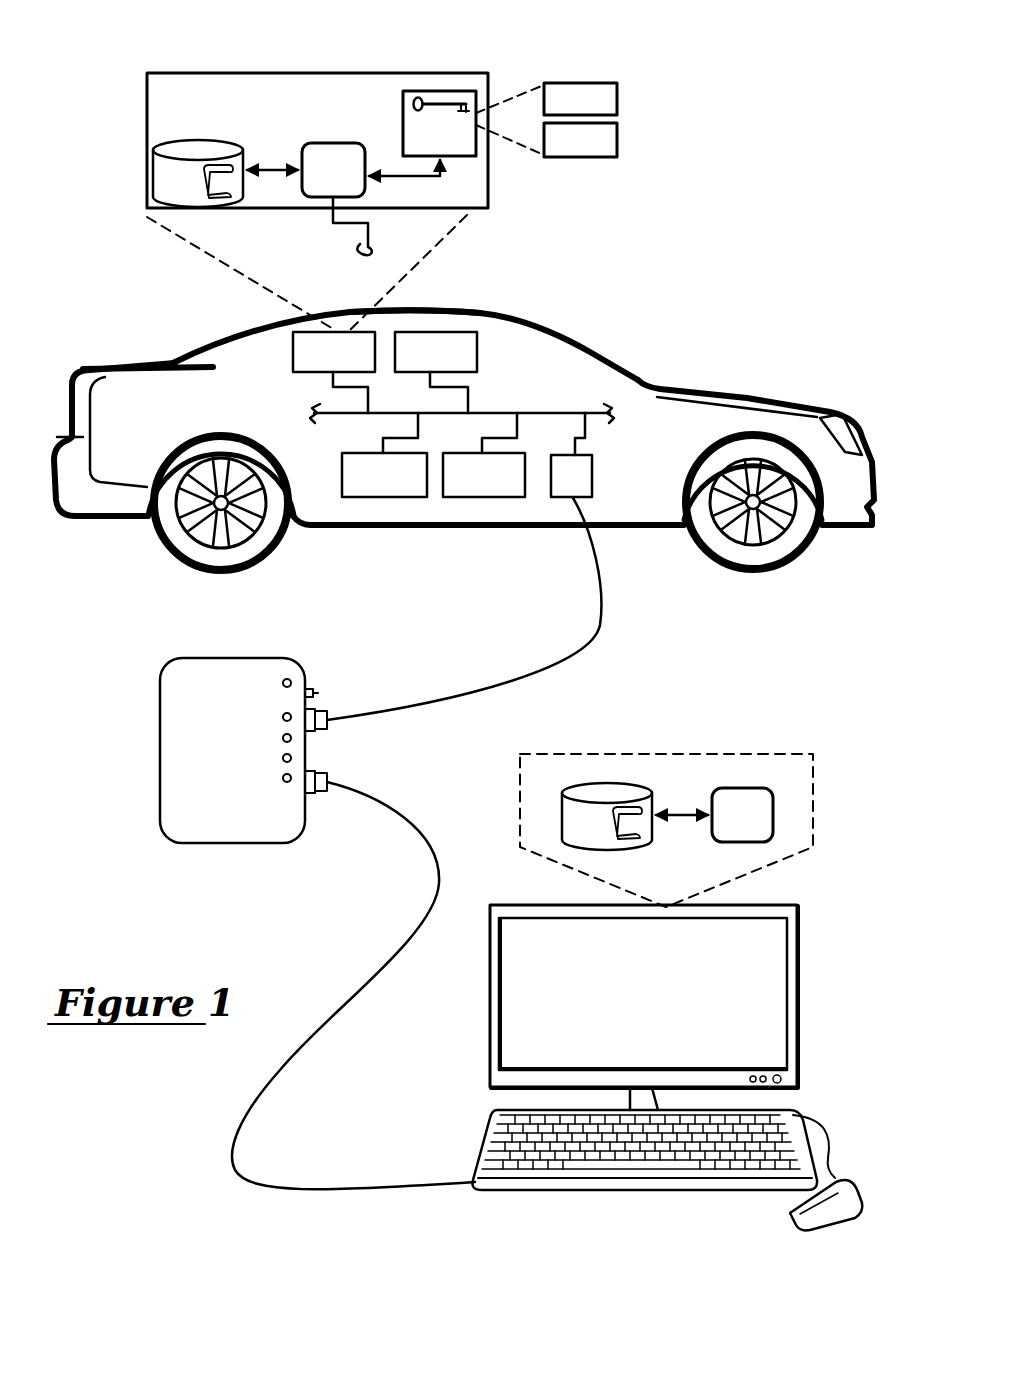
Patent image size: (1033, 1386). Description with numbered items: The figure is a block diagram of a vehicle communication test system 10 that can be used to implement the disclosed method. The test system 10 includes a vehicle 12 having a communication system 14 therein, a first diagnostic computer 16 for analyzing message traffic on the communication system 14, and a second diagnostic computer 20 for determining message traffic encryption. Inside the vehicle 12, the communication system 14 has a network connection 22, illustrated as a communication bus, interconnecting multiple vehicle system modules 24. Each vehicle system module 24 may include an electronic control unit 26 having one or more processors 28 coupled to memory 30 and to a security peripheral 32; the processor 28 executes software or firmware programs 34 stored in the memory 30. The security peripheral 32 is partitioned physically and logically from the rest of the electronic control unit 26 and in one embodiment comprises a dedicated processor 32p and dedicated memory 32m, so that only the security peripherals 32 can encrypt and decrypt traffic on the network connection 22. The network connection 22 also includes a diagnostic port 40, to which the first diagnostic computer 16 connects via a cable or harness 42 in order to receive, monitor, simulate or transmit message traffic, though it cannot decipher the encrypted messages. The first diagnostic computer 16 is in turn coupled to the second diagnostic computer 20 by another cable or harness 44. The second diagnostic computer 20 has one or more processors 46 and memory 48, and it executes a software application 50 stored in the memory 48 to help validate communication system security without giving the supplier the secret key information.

The vehicle communication test system 10 is at (840, 684).
The vehicle 12 is at (646, 374).
The communication system 14 is at (515, 336).
The first diagnostic computer 16 is at (154, 819).
The second diagnostic computer 20 is at (484, 1082).
The network connection 22 is at (493, 408).
The vehicle system module 24 is at (336, 285).
The electronic control unit 26 is at (262, 130).
The processor 28 is at (343, 199).
The memory 30 is at (198, 173).
The security peripheral 32 is at (473, 120).
The dedicated processor 32p is at (580, 99).
The dedicated memory 32m is at (580, 140).
The software or firmware program 34 is at (238, 190).
The diagnostic port 40 is at (571, 476).
The cable or harness 42 is at (600, 632).
The cable or harness 44 is at (293, 1074).
The processor 46 is at (714, 815).
The memory 48 is at (607, 816).
The software application 50 is at (644, 833).